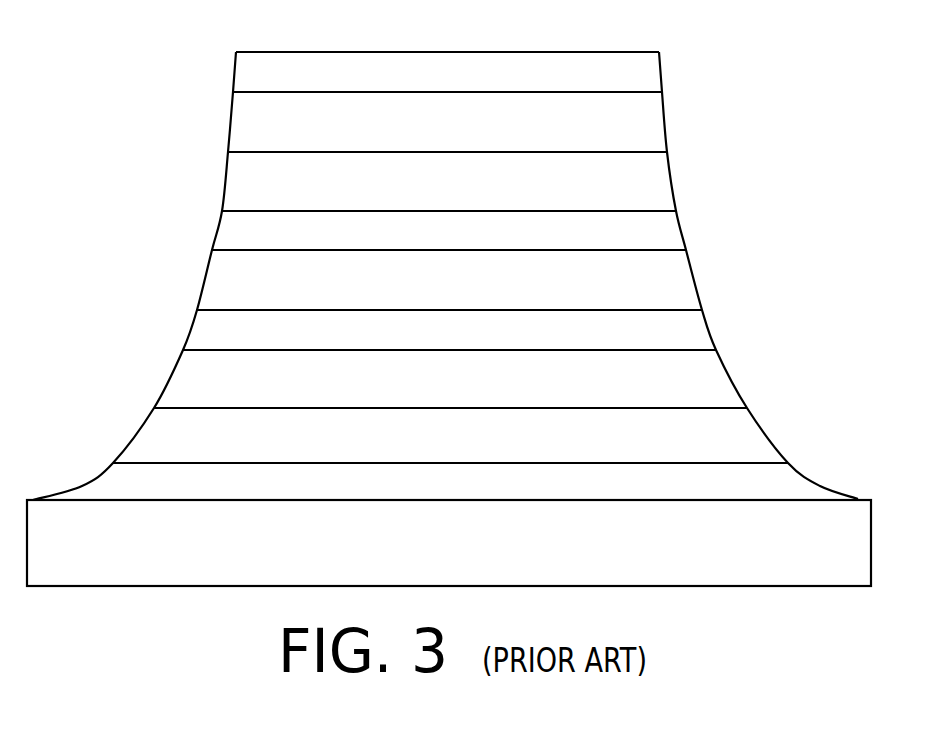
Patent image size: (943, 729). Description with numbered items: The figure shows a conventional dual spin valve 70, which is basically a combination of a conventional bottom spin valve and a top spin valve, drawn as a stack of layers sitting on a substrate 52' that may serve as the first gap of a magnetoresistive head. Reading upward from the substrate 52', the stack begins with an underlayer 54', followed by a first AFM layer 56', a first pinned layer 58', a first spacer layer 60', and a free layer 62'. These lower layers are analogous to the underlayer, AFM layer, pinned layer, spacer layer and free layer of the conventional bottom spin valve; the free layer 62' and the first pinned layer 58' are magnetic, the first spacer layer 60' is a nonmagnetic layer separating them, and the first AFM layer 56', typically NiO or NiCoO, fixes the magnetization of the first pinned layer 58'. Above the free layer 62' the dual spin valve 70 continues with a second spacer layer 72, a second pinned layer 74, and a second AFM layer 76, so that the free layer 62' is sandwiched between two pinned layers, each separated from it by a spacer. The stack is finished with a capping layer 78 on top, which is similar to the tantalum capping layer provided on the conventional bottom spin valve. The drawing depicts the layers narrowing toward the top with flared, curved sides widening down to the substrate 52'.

The conventional dual spin valve 70 is at (468, 32).
The capping layer 78 is at (653, 71).
The second AFM layer 76 is at (233, 120).
The second pinned layer 74 is at (660, 178).
The second spacer layer 72 is at (222, 226).
The free layer 62' is at (489, 277).
The first spacer layer 60' is at (406, 323).
The first pinned layer 58' is at (485, 376).
The first AFM layer 56' is at (420, 433).
The underlayer 54' is at (446, 455).
The substrate 52' is at (449, 578).